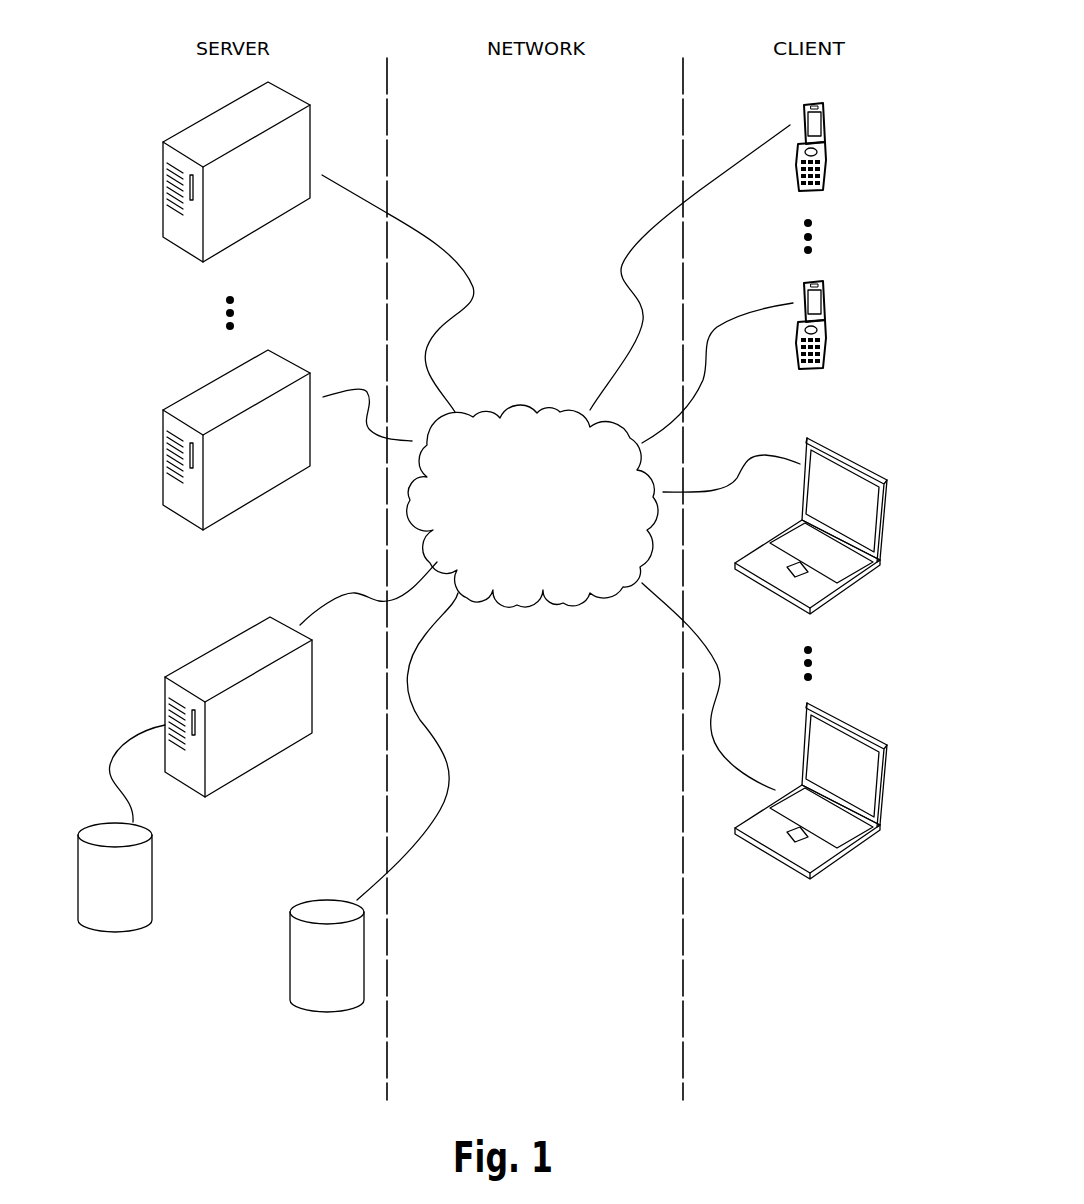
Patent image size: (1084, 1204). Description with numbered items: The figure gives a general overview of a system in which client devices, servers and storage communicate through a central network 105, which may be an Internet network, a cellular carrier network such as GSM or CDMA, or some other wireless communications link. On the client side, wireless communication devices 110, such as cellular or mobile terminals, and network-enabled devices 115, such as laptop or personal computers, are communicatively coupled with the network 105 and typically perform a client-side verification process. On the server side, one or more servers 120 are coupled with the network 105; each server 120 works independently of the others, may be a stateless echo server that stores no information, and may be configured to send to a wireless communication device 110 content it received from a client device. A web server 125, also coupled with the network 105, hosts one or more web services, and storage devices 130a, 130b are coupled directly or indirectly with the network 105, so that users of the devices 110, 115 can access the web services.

The network 105 is at (532, 506).
The wireless communication device 110 is at (821, 178).
The network-enabled device 115 is at (855, 586).
The server 120 is at (268, 223).
The web server 125 is at (260, 765).
The storage device 130a is at (120, 932).
The storage device 130b is at (330, 1012).